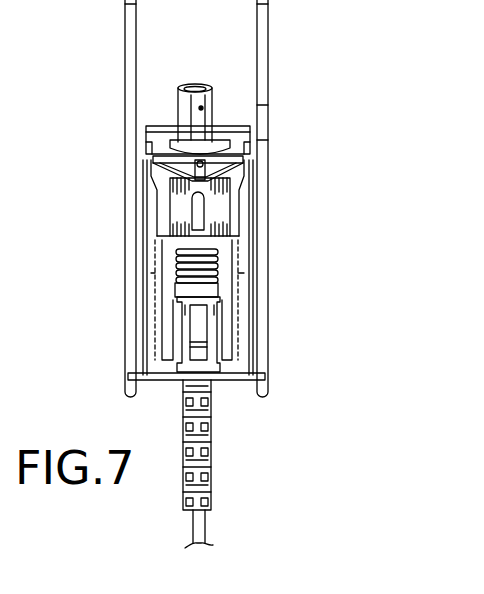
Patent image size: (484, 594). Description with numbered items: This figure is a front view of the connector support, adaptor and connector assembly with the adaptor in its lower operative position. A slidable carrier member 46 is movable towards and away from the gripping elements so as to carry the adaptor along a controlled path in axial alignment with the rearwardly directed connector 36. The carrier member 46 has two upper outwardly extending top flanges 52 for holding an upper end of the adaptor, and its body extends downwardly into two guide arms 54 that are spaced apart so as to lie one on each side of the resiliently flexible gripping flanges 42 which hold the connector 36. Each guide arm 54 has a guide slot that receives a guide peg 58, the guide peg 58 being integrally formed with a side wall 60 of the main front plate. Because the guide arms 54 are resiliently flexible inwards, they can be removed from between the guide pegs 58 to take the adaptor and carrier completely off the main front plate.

The side wall 60 is at (124, 52).
The top flanges 52 is at (147, 127).
The carrier member 46 is at (267, 237).
The guide peg 58 is at (250, 268).
The guide arms 54 is at (152, 290).
The connector 36 is at (192, 322).
The gripping flanges 42 is at (183, 372).